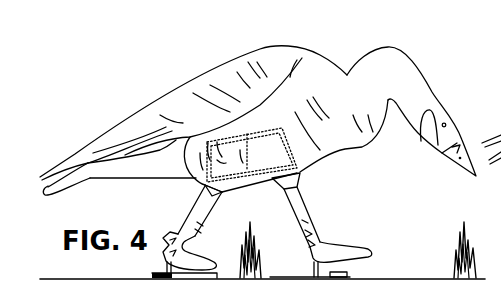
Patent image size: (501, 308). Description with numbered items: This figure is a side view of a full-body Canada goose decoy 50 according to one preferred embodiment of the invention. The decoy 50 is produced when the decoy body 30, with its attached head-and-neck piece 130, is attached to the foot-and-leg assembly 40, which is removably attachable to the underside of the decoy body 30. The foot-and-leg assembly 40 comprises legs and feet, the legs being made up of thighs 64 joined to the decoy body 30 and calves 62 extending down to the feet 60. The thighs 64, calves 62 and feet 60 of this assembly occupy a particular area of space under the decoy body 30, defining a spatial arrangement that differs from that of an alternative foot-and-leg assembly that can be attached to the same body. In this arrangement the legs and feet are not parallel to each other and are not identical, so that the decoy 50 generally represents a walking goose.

The decoy body 30 is at (140, 103).
The foot-and-leg assembly 40 is at (317, 204).
The full-body Canada goose decoy 50 is at (187, 58).
The feet 60 is at (196, 268).
The calves 62 is at (195, 217).
The thighs 64 is at (285, 187).
The head-and-neck piece 130 is at (416, 61).